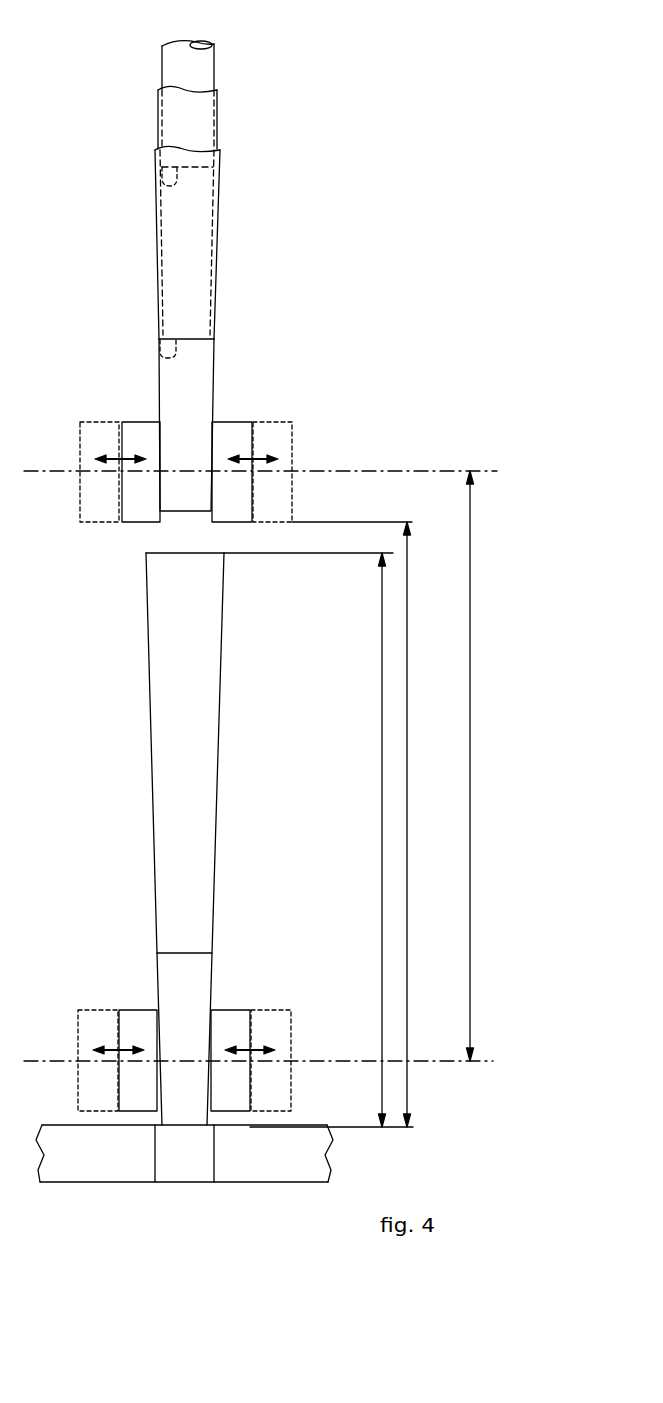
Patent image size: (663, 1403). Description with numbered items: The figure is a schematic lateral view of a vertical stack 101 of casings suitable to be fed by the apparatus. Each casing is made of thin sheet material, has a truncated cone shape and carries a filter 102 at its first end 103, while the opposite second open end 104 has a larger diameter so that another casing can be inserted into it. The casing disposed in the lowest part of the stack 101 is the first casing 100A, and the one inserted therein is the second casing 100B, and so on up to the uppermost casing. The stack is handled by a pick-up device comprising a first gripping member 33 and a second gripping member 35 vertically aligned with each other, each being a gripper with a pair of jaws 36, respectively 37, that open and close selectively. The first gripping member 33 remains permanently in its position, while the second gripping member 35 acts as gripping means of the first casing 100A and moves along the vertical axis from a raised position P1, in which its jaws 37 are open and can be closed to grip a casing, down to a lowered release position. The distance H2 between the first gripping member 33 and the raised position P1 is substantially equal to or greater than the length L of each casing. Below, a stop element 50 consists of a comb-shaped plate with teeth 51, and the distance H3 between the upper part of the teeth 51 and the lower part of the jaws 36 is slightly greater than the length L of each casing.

The vertical stack 101 is at (318, 181).
The first casing 100A is at (218, 738).
The second casing 100B is at (215, 255).
The filter 102 is at (177, 112).
The first end 103 is at (157, 178).
The second open end 104 is at (207, 553).
The first gripping member 33 is at (296, 491).
The jaws 36 is at (88, 438).
The second gripping member 35 is at (110, 1033).
The jaws 37 is at (140, 1018).
The stop element 50 is at (67, 1165).
The teeth 51 is at (195, 1168).
The distance H2 is at (470, 705).
The distance H3 is at (407, 827).
The length L is at (381, 842).
The raised position P1 is at (313, 1060).